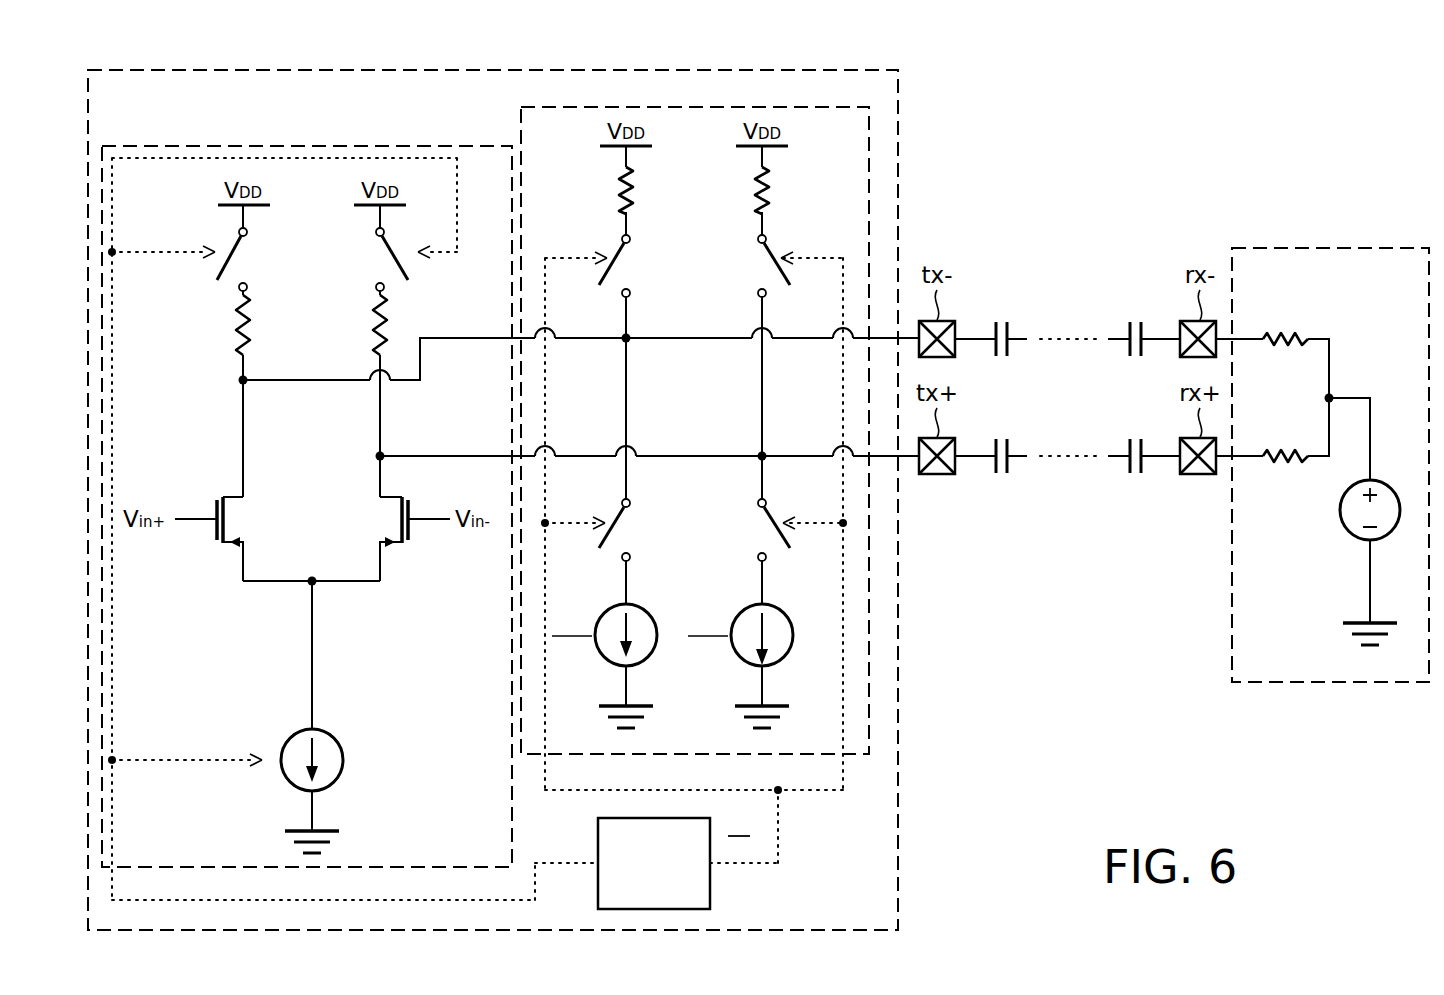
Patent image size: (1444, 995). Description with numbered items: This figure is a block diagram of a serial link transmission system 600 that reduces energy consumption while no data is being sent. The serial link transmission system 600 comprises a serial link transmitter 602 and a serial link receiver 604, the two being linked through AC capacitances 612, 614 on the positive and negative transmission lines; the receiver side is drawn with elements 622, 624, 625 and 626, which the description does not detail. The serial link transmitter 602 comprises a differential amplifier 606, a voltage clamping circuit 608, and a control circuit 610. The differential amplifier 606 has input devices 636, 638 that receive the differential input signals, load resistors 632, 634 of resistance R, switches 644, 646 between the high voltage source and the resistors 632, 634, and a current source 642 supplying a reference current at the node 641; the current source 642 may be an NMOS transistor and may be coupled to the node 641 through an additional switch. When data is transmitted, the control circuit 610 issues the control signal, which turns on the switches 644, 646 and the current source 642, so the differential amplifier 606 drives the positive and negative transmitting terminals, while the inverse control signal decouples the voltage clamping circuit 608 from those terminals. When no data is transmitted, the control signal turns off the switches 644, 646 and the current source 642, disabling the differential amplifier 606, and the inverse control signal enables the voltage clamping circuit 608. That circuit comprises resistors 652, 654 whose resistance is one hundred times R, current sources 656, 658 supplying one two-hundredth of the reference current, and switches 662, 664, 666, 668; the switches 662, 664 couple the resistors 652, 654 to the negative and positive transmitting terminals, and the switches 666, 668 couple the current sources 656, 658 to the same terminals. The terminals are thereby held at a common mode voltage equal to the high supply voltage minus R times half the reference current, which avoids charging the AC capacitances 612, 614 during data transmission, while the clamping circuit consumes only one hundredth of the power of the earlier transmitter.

The serial link transmission system 600 is at (1343, 142).
The serial link transmitter 602 is at (905, 150).
The serial link receiver 604 is at (1332, 247).
The differential amplifier 606 is at (320, 145).
The voltage clamping circuit 608 is at (520, 108).
The control circuit 610 is at (712, 889).
The AC capacitance 612 is at (1136, 320).
The AC capacitance 614 is at (1136, 437).
The termination resistor 622 is at (1285, 328).
The termination resistor 624 is at (1285, 445).
The common node 625 is at (1334, 395).
The voltage source 626 is at (1346, 536).
The resistor 632 is at (233, 327).
The resistor 634 is at (370, 327).
The input transistor 636 is at (220, 544).
The input transistor 638 is at (405, 544).
The node 641 is at (312, 577).
The current source 642 is at (339, 733).
The switch 644 is at (247, 257).
The switch 646 is at (378, 260).
The resistor 652 is at (640, 190).
The resistor 654 is at (776, 190).
The current source 656 is at (650, 608).
The current source 658 is at (742, 661).
The switch 662 is at (630, 263).
The switch 664 is at (756, 264).
The switch 666 is at (634, 529).
The switch 668 is at (760, 530).